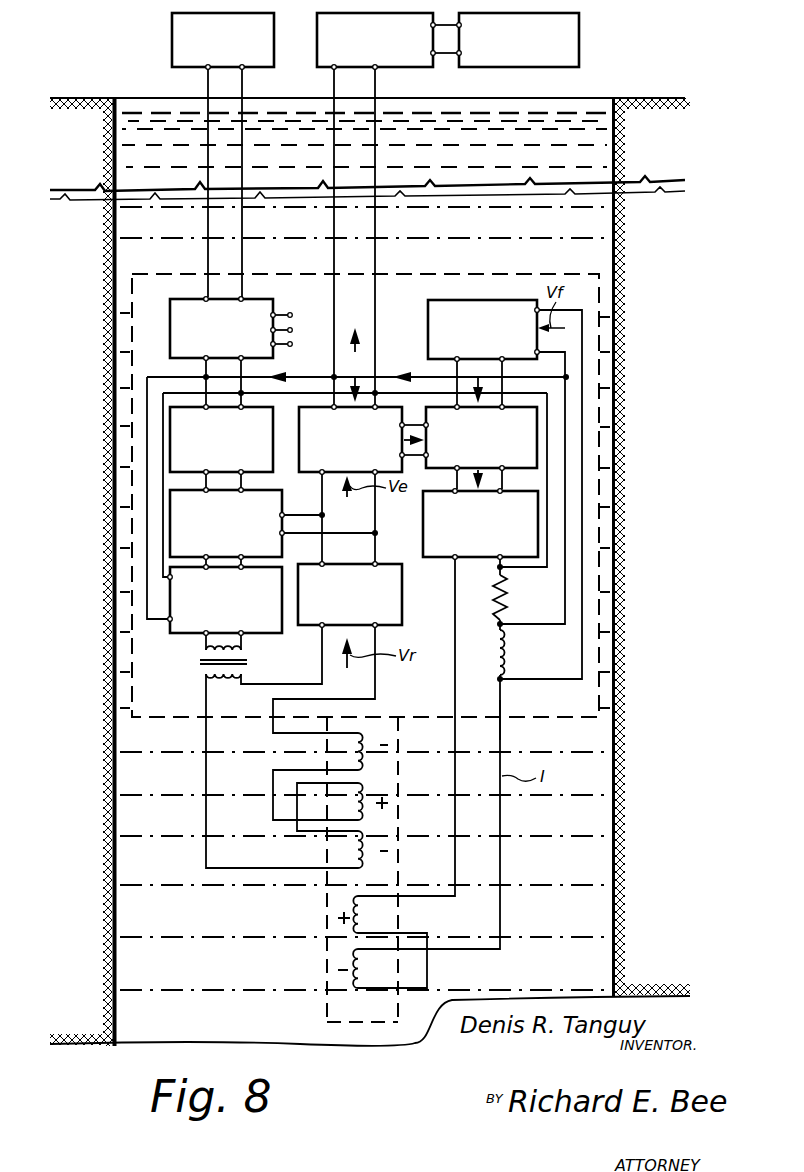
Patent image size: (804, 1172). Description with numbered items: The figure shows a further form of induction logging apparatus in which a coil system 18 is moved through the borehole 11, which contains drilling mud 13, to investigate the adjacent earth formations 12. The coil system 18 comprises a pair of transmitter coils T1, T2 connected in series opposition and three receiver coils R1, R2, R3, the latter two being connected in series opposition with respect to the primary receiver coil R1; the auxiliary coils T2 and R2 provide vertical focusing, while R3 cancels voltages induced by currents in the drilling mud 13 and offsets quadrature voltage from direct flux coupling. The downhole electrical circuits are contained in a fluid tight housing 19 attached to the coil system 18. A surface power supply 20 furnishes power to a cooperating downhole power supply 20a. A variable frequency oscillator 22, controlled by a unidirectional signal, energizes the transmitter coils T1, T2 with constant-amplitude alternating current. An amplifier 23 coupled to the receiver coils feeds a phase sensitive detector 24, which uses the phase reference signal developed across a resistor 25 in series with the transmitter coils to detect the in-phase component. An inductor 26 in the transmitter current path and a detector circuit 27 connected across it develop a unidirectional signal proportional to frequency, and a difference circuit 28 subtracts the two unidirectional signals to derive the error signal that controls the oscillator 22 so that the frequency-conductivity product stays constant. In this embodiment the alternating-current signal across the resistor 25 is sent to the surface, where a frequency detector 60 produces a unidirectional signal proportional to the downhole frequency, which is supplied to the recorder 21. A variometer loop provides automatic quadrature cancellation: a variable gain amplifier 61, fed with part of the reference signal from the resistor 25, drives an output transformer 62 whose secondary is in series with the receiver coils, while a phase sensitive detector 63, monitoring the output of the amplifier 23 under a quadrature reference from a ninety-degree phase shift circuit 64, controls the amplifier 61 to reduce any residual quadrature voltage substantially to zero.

The borehole 11 is at (632, 846).
The earth formations 12 is at (655, 534).
The drilling mud 13 is at (553, 113).
The coil system 18 is at (318, 903).
The fluid tight housing 19 is at (530, 720).
The power supply 20 is at (172, 36).
The cooperating power supply 20a is at (192, 299).
The recorder 21 is at (579, 56).
The variable frequency oscillator 22 is at (423, 524).
The amplifier 23 is at (402, 612).
The phase sensitive detector 24 is at (366, 480).
The resistor 25 is at (507, 594).
The inductor 26 is at (507, 655).
The detector circuit 27 is at (440, 300).
The difference circuit 28 is at (511, 470).
The frequency detector 60 is at (317, 68).
The variable gain amplifier 61 is at (260, 633).
The output transformer 62 is at (200, 660).
The phase sensitive detector 63 is at (282, 540).
The 90° phase shift circuit 64 is at (262, 472).
The receiver coil R1 is at (372, 808).
The receiver coil R2 is at (372, 750).
The receiver coil R3 is at (372, 856).
The transmitter coil T1 is at (356, 922).
The transmitter coil T2 is at (356, 970).